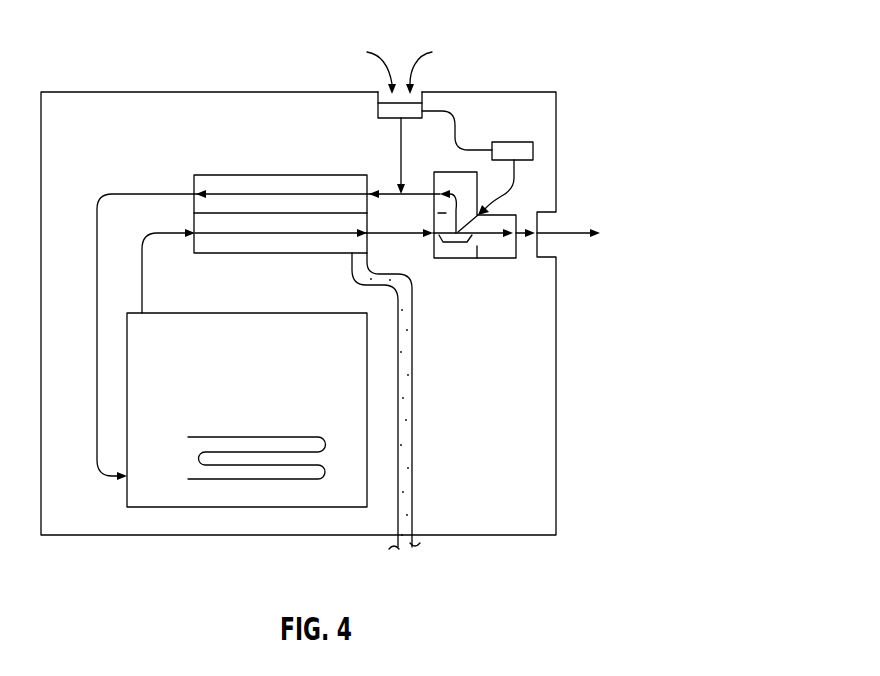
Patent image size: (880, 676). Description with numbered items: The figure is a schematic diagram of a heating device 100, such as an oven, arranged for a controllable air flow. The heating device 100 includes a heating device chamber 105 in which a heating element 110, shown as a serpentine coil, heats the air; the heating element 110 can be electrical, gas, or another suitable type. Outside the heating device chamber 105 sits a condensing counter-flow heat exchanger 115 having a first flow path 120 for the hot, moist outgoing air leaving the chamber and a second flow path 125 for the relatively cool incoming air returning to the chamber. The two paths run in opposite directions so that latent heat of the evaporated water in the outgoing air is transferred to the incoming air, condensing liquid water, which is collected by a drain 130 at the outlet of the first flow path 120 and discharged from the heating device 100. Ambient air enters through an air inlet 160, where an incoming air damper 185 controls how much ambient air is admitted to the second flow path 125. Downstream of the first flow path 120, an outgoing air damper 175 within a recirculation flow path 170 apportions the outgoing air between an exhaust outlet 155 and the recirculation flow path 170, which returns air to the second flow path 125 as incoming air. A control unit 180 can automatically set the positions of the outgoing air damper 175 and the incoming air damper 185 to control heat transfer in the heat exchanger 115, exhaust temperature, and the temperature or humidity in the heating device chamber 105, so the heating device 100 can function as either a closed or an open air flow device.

The heating device 100 is at (108, 58).
The heating device chamber 105 is at (175, 494).
The heating element 110 is at (255, 437).
The condensing counter-flow heat exchanger 115 is at (193, 182).
The first flow path 120 is at (275, 253).
The second flow path 125 is at (280, 175).
The drain 130 is at (413, 413).
The exhaust outlet 155 is at (543, 249).
The air inlet 160 is at (425, 95).
The recirculation flow path 170 is at (468, 260).
The outgoing air damper 175 is at (470, 225).
The control unit 180 is at (534, 152).
The incoming air damper 185 is at (378, 113).